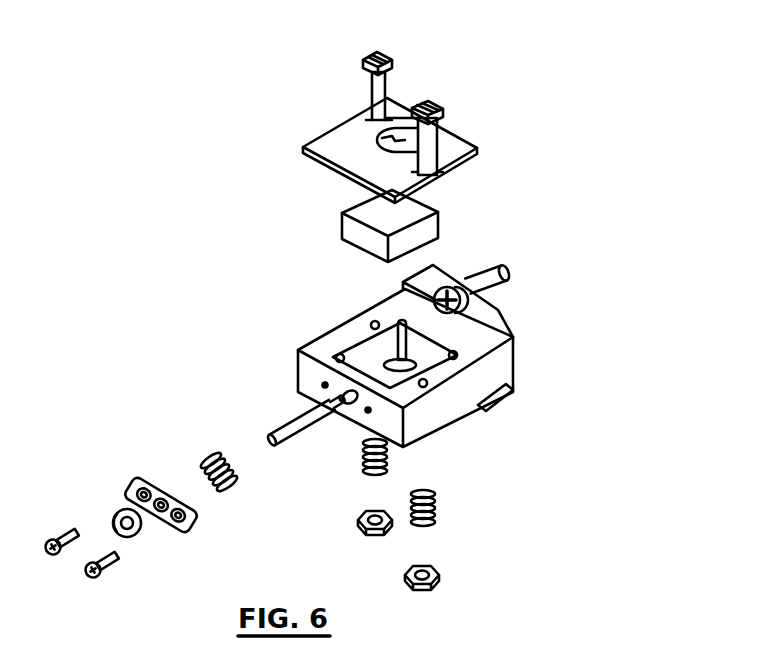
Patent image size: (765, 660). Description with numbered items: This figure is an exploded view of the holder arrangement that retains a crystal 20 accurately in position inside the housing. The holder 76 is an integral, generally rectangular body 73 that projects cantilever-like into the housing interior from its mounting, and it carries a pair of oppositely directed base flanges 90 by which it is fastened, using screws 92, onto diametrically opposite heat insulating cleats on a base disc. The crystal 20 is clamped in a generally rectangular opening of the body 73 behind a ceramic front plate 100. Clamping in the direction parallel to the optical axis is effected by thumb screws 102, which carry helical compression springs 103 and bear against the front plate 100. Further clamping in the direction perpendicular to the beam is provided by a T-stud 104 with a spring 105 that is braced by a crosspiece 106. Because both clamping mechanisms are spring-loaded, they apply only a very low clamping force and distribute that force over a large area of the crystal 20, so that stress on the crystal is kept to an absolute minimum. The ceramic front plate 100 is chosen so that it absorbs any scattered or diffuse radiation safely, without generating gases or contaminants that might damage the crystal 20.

The crystal 20 is at (428, 230).
The generally rectangular body 73 is at (445, 408).
The holder 76 is at (535, 341).
The base flanges 90 is at (480, 306).
The screws 92 is at (404, 283).
The ceramic front plate 100 is at (450, 150).
The thumb screws 102 is at (423, 110).
The helical compression springs 103 is at (387, 452).
The T-stud 104 is at (287, 423).
The spring 105 is at (222, 483).
The crosspiece 106 is at (150, 478).